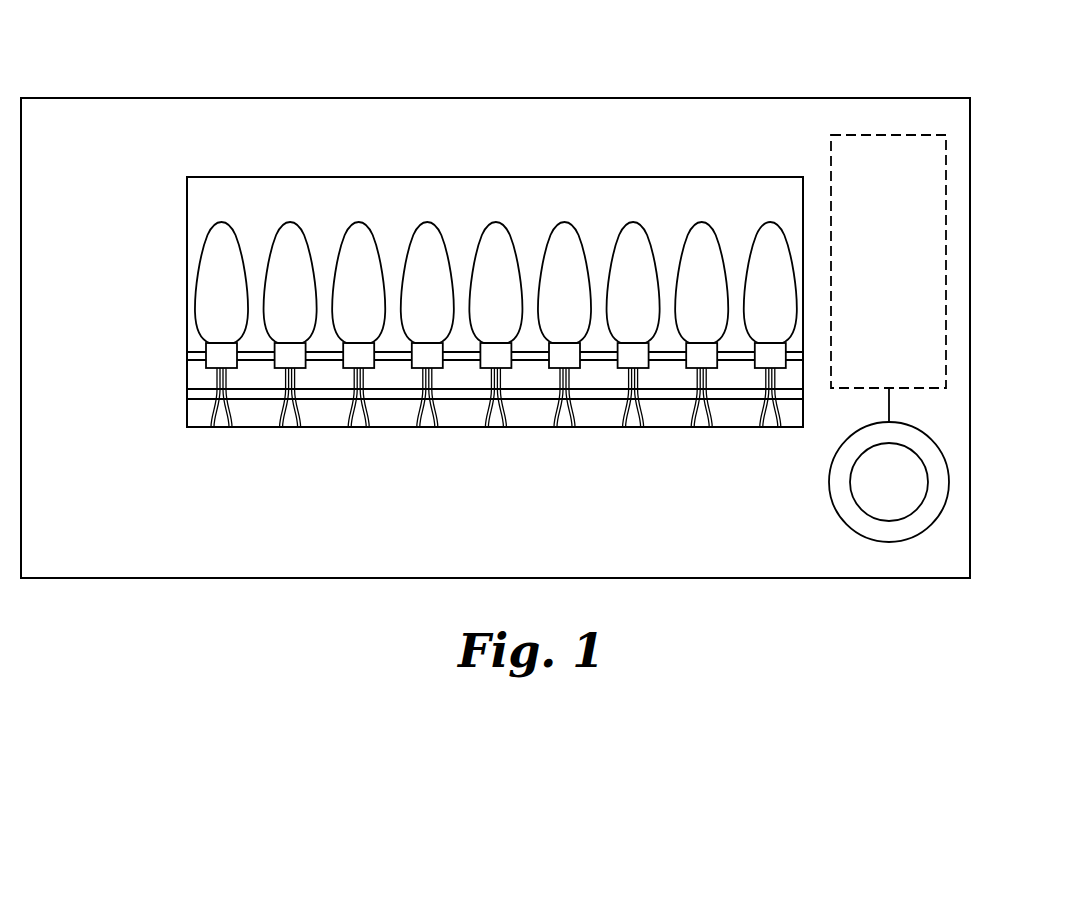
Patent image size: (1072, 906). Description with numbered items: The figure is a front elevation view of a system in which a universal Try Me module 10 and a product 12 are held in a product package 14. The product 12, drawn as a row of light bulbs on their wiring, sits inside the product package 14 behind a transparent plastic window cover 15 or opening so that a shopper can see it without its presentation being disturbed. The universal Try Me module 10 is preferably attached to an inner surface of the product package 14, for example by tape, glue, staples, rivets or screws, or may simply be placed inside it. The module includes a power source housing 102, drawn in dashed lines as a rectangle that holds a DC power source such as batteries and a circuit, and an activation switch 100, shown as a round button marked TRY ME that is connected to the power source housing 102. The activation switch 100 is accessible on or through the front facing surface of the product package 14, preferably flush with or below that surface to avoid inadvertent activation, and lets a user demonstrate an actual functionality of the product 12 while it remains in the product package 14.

The universal Try Me module 10 is at (546, 294).
The product 12 is at (223, 222).
The product package 14 is at (97, 98).
The transparent plastic window cover 15 is at (496, 177).
The activation switch 100 is at (950, 481).
The power source housing 102 is at (946, 253).